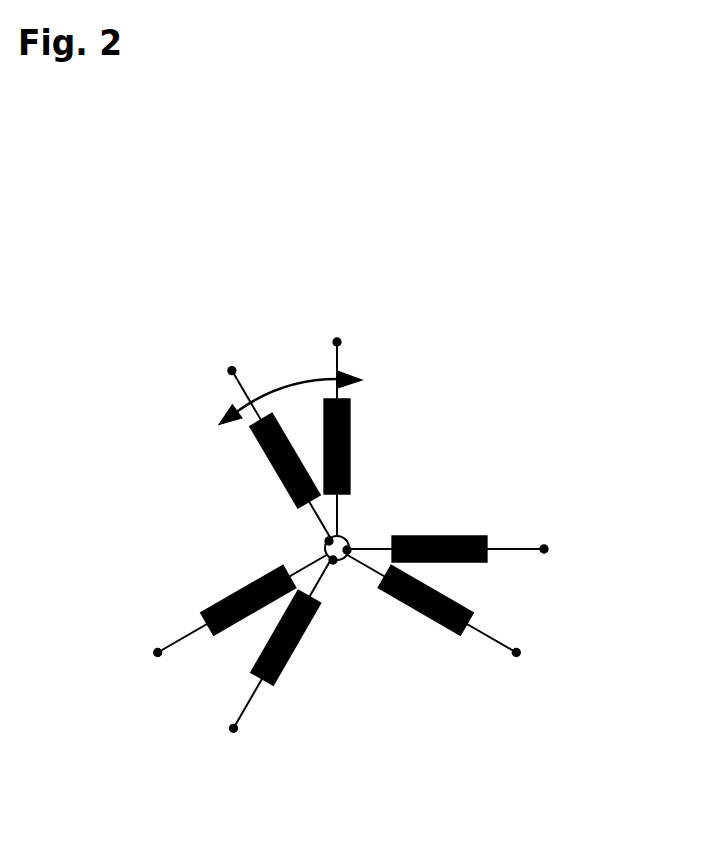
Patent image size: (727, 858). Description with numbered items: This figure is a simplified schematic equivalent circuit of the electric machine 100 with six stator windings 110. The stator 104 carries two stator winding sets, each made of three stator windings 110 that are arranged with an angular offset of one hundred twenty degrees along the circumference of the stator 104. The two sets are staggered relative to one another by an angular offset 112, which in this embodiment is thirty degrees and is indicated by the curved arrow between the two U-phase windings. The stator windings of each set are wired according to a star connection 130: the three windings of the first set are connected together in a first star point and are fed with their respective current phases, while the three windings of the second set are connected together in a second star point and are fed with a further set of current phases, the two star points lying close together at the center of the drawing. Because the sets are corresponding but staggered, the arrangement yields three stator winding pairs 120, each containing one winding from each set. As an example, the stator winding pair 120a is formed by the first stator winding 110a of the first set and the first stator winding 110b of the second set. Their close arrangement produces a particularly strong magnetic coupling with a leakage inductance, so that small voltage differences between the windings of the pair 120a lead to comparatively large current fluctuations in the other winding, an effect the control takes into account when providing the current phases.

The electric machine 100 is at (487, 223).
The stator 104 is at (377, 467).
The stator windings 110 is at (350, 438).
The first stator winding of the first stator winding set 110a is at (419, 512).
The first stator winding of the second stator winding set 110b is at (288, 490).
The angular offset 112 is at (298, 378).
The stator winding pairs 120 is at (268, 321).
The stator winding pair 120a is at (274, 140).
The star connection 130 is at (340, 553).